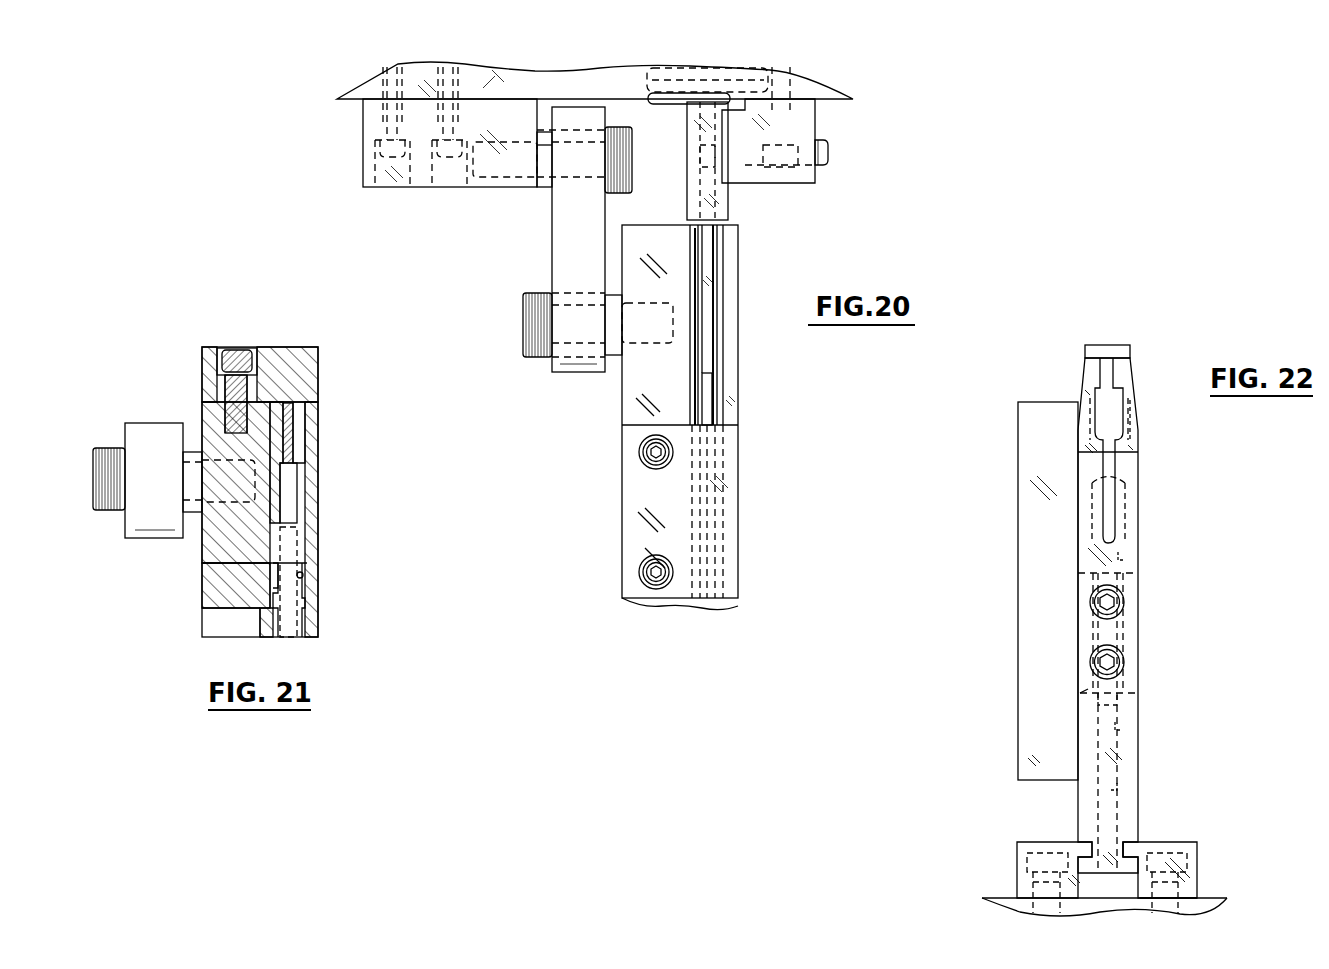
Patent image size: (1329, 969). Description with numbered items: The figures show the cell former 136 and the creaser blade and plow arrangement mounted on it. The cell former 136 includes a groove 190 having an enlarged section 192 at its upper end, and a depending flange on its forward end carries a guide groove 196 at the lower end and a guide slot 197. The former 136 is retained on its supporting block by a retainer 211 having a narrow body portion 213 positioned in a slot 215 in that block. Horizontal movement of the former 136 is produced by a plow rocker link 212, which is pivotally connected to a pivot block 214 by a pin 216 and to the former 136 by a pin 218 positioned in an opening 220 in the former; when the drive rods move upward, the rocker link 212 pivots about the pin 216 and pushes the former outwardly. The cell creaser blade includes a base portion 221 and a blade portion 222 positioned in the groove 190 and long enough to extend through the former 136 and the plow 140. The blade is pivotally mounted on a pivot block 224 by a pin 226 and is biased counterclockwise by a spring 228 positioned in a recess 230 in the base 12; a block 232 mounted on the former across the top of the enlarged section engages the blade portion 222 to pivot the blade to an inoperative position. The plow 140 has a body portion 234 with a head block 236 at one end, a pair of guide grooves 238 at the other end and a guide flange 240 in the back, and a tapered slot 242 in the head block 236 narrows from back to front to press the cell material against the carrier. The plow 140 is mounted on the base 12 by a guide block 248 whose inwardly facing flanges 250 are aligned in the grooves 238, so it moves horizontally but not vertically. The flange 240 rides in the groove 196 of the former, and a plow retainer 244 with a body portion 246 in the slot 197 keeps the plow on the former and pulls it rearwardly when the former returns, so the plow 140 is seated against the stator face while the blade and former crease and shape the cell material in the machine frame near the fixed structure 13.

In FIG. 22, the base 12 is at (1000, 898).
In FIG. 20, the top plate 13 is at (815, 90).
In FIG. 20, the cell former 136 is at (622, 395).
In FIG. 21, the cell former 136 is at (318, 512).
In FIG. 22, the cell former 136 is at (1018, 433).
In FIG. 22, the plow 140 is at (1142, 506).
In FIG. 20, the groove 190 is at (713, 318).
In FIG. 21, the groove 190 is at (290, 485).
In FIG. 20, the enlarged section 192 is at (721, 355).
In FIG. 21, the enlarged section 192 is at (300, 437).
In FIG. 22, the enlarged section 192 is at (1138, 422).
In FIG. 22, the guide groove 196 is at (1120, 730).
In FIG. 22, the guide slot 197 is at (1125, 557).
In FIG. 21, the retainer 211 is at (310, 628).
In FIG. 20, the plow rocker link 212 is at (555, 235).
In FIG. 21, the plow rocker link 212 is at (147, 430).
In FIG. 21, the narrow body portion 213 is at (292, 600).
In FIG. 20, the pivot block 214 is at (427, 187).
In FIG. 21, the slot 215 is at (305, 582).
In FIG. 20, the pin 216 is at (632, 178).
In FIG. 20, the pin 218 is at (523, 320).
In FIG. 21, the pin 218 is at (93, 483).
In FIG. 20, the opening 220 is at (653, 348).
In FIG. 21, the opening 220 is at (190, 535).
In FIG. 20, the base portion 221 is at (730, 207).
In FIG. 20, the blade portion 222 is at (708, 272).
In FIG. 21, the blade portion 222 is at (293, 418).
In FIG. 20, the pivot block 224 is at (815, 182).
In FIG. 20, the pin 226 is at (828, 156).
In FIG. 20, the spring 228 is at (667, 104).
In FIG. 20, the recess 230 is at (648, 84).
In FIG. 20, the block 232 is at (622, 540).
In FIG. 21, the block 232 is at (313, 352).
In FIG. 22, the body portion 234 is at (1137, 703).
In FIG. 22, the head block 236 is at (1132, 367).
In FIG. 22, the guide grooves 238 is at (1127, 852).
In FIG. 22, the guide flange 240 is at (1124, 790).
In FIG. 22, the tapered slot 242 is at (1124, 388).
In FIG. 22, the plow retainer 244 is at (1084, 696).
In FIG. 22, the body portion 246 is at (1122, 636).
In FIG. 22, the guide block 248 is at (1192, 883).
In FIG. 22, the inwardly facing flanges 250 is at (1078, 850).